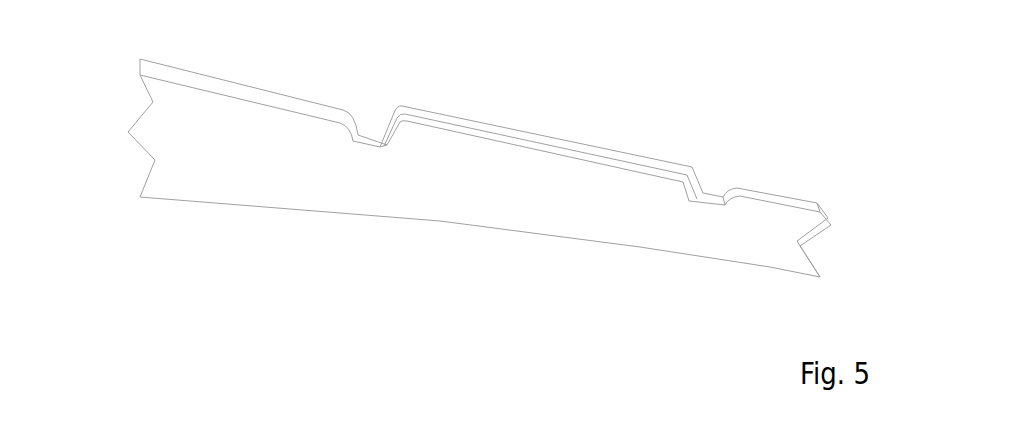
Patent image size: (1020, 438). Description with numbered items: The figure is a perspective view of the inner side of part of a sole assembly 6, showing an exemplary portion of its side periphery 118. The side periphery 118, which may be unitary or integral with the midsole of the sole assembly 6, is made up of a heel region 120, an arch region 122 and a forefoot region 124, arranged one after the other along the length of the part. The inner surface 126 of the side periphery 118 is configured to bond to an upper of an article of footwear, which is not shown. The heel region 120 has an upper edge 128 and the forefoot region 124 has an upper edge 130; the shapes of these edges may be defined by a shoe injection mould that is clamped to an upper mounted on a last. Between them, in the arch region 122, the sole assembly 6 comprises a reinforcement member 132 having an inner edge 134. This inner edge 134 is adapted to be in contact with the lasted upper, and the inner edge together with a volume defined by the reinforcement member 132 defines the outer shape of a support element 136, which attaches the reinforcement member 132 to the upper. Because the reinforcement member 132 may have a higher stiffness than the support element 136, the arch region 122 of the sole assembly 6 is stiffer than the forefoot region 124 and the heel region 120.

The sole assembly 6 is at (727, 102).
The side periphery 118 is at (330, 188).
The heel region 120 is at (197, 142).
The arch region 122 is at (522, 188).
The forefoot region 124 is at (788, 230).
The inner surface 126 is at (660, 222).
The upper edge of the heel region 128 is at (268, 98).
The upper edge of the forefoot region 130 is at (757, 193).
The reinforcement member 132 is at (615, 158).
The inner edge 134 is at (577, 160).
The support element 136 is at (453, 180).